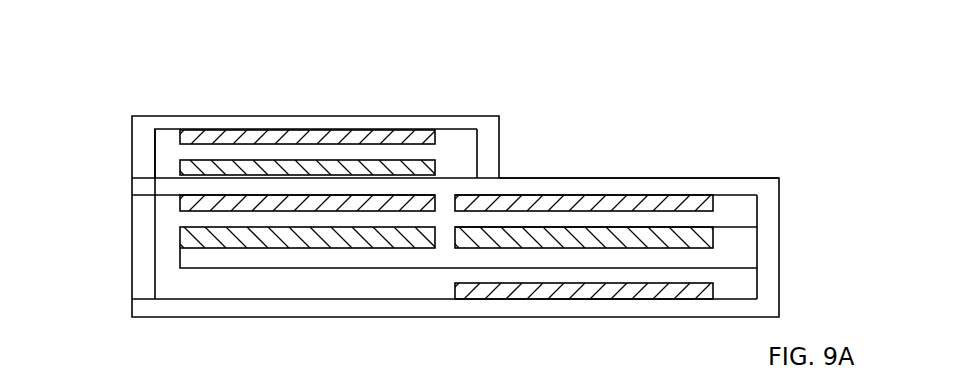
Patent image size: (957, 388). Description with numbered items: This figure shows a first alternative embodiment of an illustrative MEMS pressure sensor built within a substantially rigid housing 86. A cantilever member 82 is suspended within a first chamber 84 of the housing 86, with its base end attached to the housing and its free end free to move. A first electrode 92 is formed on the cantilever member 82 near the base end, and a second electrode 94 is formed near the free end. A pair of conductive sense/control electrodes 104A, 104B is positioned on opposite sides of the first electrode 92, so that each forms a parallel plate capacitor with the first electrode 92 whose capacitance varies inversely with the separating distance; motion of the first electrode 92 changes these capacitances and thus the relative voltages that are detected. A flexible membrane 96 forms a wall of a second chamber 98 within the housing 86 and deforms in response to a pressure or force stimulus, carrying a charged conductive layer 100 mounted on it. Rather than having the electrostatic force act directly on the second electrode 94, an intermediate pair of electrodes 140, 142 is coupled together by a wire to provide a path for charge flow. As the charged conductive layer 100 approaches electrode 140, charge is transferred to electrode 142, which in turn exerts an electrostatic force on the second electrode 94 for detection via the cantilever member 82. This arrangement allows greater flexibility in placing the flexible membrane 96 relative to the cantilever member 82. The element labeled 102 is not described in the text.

The cantilever member 82 is at (178, 252).
The first chamber 84 is at (737, 208).
The housing 86 is at (781, 215).
The first electrode 92 is at (583, 228).
The second electrode 94 is at (180, 227).
The flexible membrane 96 is at (182, 118).
The second chamber 98 is at (460, 148).
The conductive layer 100 is at (273, 130).
The housing wall 102 is at (167, 187).
The sense/control electrode 104A is at (533, 195).
The sense/control electrode 104B is at (532, 302).
The intermediate electrode 140 is at (340, 158).
The intermediate electrode 142 is at (207, 192).